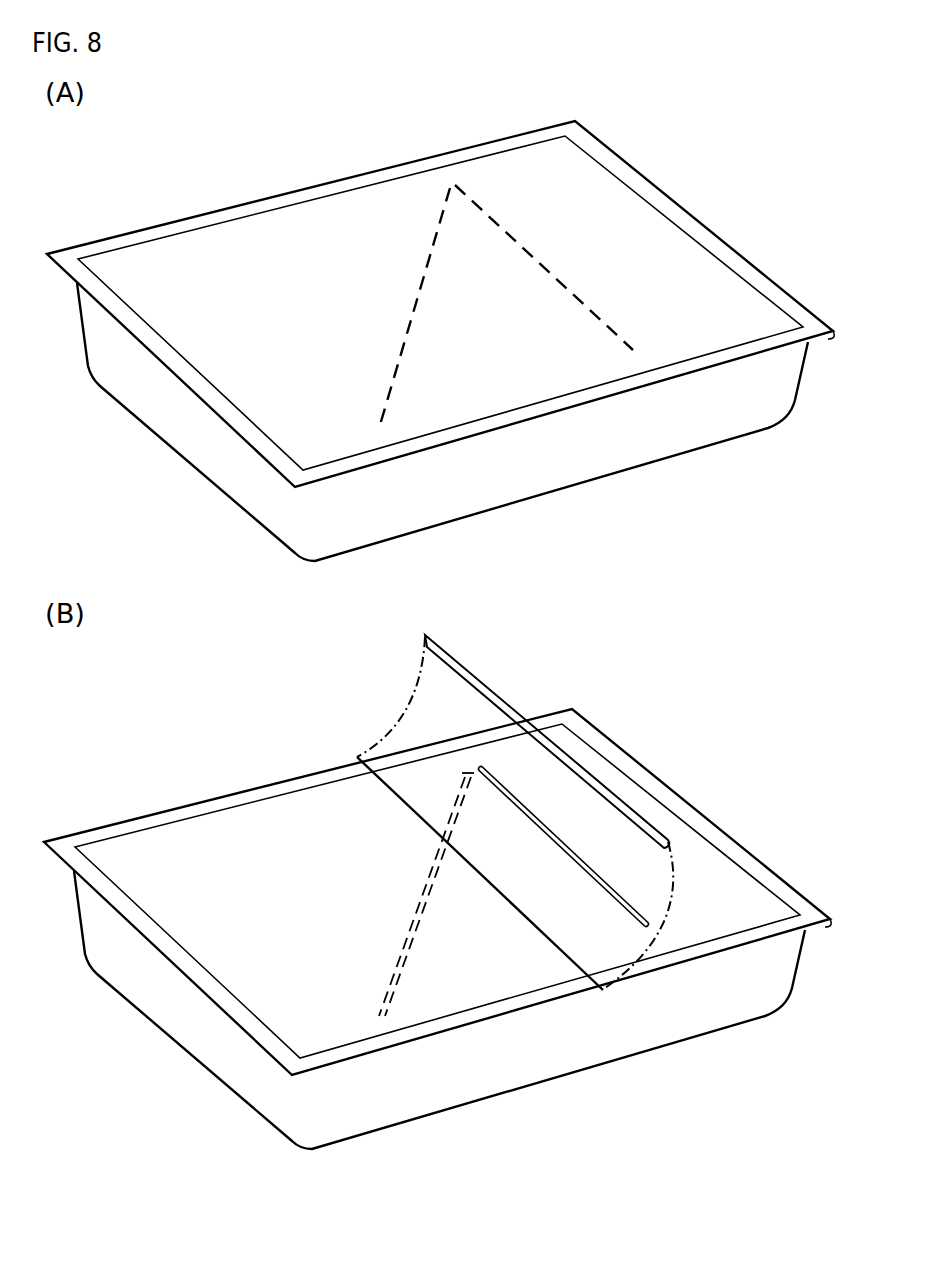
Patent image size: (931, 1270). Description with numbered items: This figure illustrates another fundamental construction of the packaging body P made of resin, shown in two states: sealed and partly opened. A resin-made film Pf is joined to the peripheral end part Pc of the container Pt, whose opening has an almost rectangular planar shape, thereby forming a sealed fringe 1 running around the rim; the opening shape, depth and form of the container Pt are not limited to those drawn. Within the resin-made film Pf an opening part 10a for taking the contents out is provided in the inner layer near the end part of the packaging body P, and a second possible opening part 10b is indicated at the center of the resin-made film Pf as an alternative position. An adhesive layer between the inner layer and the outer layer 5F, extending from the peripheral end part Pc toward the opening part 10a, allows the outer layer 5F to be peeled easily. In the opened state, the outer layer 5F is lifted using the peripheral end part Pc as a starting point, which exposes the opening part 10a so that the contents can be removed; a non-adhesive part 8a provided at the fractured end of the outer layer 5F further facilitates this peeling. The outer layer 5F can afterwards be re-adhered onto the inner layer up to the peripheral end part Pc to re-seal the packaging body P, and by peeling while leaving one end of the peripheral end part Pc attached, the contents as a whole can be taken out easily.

The packaging body P is at (439, 630).
The peripheral end part Pc is at (673, 202).
The resin-made film Pf is at (548, 379).
The container Pt is at (597, 478).
The sealed fringe 1 is at (93, 248).
The opening part 10a is at (533, 257).
The opening part 10b is at (415, 300).
The outer layer 5F is at (412, 702).
The non-adhesive part 8a is at (472, 678).